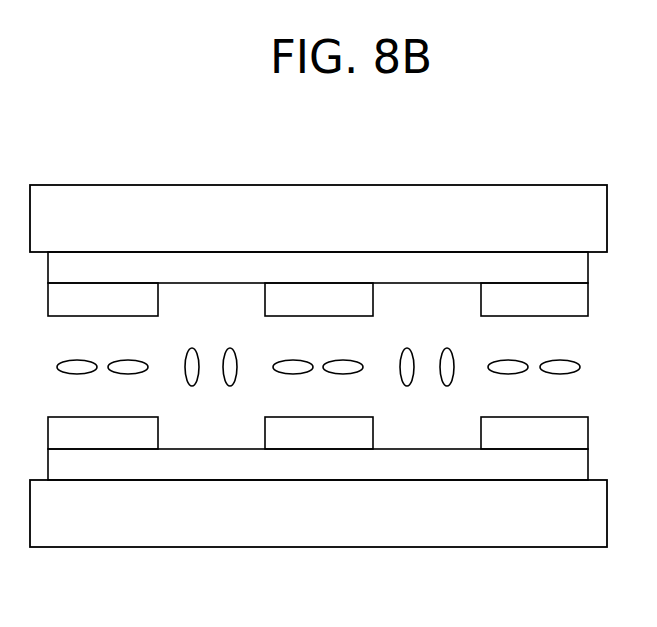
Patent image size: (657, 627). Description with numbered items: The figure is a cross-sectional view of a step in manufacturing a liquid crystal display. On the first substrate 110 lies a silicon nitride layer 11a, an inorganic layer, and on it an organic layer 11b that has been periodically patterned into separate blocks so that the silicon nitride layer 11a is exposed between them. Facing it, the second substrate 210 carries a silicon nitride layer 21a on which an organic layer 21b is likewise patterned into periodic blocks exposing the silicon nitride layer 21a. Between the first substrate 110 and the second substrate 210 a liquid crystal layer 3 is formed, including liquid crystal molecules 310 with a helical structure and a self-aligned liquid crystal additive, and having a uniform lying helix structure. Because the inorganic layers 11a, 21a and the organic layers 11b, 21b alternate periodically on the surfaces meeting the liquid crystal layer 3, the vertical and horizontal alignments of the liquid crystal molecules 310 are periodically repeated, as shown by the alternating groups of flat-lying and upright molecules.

The second substrate 210 is at (110, 213).
The silicon nitride layer 21a is at (230, 267).
The organic layer 21b is at (350, 298).
The liquid crystal layer 3 is at (346, 458).
The liquid crystal molecules 310 is at (128, 375).
The organic layer 11b is at (305, 435).
The silicon nitride layer 11a is at (418, 463).
The first substrate 110 is at (515, 513).